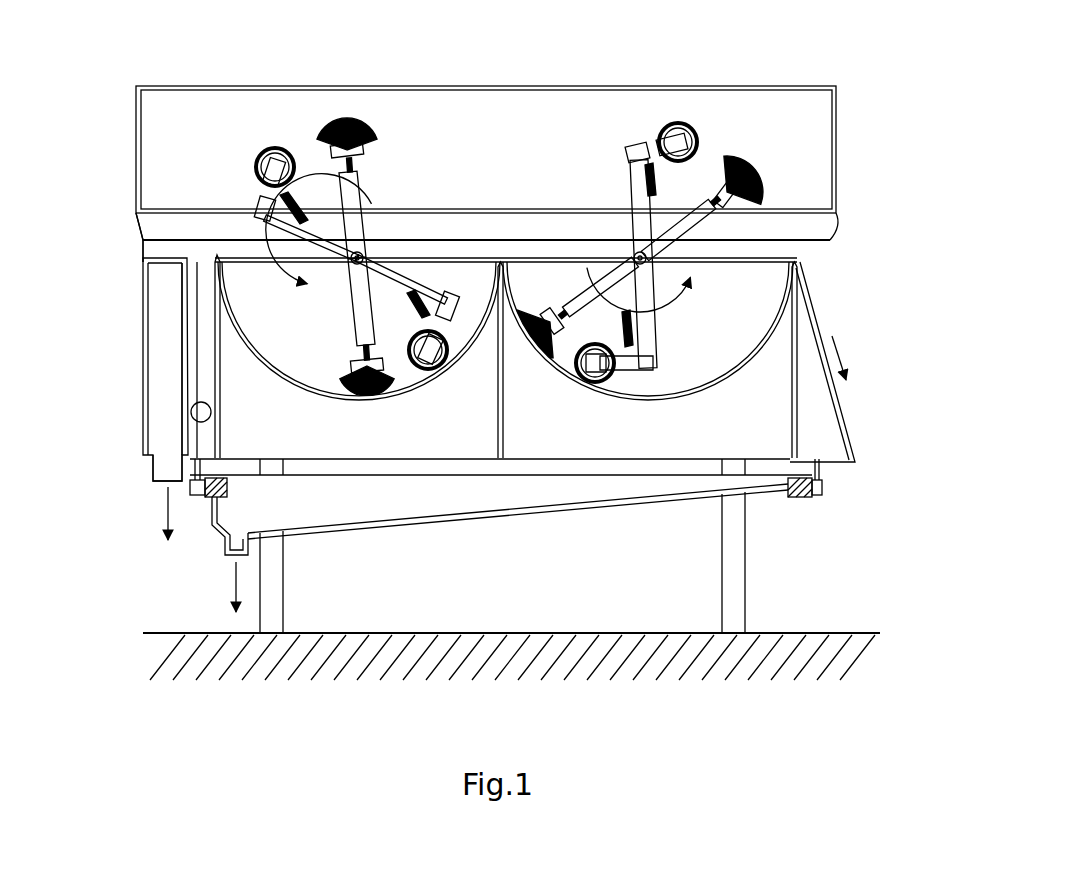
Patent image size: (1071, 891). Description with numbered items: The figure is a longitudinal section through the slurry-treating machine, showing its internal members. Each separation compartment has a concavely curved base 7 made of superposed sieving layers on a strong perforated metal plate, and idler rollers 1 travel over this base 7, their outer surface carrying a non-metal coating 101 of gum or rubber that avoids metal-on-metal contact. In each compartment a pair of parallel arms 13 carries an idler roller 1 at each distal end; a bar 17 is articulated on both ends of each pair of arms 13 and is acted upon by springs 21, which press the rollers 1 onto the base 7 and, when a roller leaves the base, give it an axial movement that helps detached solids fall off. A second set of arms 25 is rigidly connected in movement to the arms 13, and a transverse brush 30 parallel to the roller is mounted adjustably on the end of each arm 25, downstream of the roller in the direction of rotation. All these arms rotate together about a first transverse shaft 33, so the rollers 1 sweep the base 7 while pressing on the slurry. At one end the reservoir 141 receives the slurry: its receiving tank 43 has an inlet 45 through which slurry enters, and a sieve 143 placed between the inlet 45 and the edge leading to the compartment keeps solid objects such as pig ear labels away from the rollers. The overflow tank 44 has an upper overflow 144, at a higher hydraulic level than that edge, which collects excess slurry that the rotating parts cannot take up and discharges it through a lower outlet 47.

The idler roller 1 is at (287, 157).
The base 7 is at (293, 384).
The arm 13 is at (416, 297).
The bar 17 is at (258, 190).
The spring 21 is at (437, 294).
The arm 25 is at (362, 188).
The transverse brush 30 is at (365, 150).
The first transverse shaft 33 is at (372, 255).
The receiving tank 43 is at (193, 331).
The overflow tank 44 is at (157, 294).
The inlet 45 is at (191, 412).
The lower outlet 47 is at (165, 484).
The non-metal coating 101 is at (278, 148).
The reservoir 141 is at (124, 262).
The sieve 143 is at (215, 278).
The upper overflow 144 is at (165, 258).